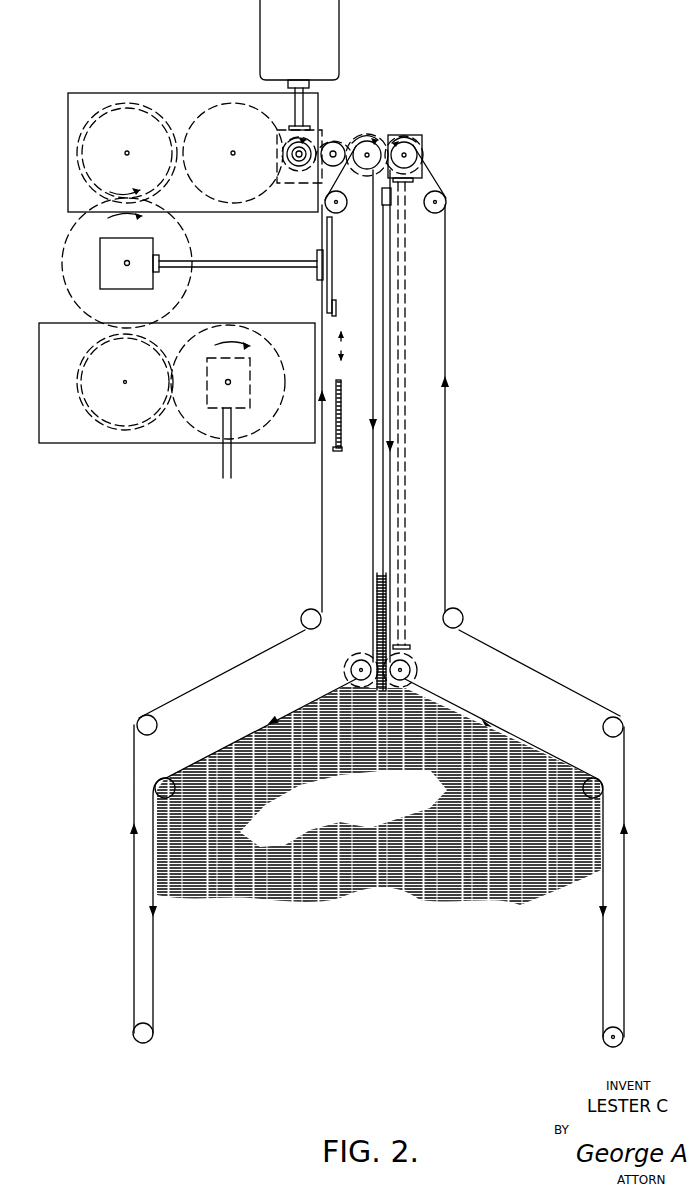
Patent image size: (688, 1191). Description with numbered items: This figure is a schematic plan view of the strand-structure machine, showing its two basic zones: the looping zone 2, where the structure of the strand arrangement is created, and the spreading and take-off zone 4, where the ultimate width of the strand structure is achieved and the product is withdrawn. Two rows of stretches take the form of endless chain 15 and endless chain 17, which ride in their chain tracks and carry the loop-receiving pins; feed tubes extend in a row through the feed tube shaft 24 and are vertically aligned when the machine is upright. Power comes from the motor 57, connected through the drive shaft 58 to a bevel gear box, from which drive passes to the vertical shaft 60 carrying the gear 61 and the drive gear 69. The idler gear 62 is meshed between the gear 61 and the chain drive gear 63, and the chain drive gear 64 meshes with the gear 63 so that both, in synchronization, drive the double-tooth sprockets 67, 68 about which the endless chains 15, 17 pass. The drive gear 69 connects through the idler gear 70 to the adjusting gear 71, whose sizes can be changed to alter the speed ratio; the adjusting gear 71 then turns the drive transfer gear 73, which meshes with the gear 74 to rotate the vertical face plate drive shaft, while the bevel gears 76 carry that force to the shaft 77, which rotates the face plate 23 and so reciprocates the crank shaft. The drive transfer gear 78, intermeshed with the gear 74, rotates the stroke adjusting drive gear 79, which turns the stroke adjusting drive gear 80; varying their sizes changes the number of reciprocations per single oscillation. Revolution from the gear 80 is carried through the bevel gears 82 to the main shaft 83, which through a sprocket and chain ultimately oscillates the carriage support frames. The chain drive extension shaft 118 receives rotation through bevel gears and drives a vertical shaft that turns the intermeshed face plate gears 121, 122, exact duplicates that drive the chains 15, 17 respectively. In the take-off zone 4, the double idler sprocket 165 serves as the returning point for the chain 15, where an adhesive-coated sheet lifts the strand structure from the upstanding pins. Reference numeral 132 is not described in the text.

The looping zone 2 is at (428, 333).
The spreading and take-off zone 4 is at (318, 895).
The endless chain 15 is at (393, 258).
The endless chain 17 is at (375, 280).
The face plate 23 is at (333, 256).
The feed tube shaft 24 is at (381, 525).
The motor 57 is at (328, 40).
The drive shaft 58 is at (310, 90).
The vertical shaft 60 is at (296, 156).
The gear 61 is at (330, 140).
The idler gear 62 is at (364, 124).
The chain drive gear 63 is at (380, 143).
The chain drive gear 64 is at (410, 142).
The double-tooth sprocket 67 is at (368, 170).
The double-tooth sprocket 68 is at (418, 155).
The drive gear 69 is at (299, 172).
The idler gear 70 is at (221, 108).
The adjusting gear 71 is at (78, 163).
The drive transfer gear 73 is at (122, 118).
The gear 74 is at (72, 270).
The bevel gears 76 is at (131, 280).
The shaft 77 is at (249, 270).
The drive transfer gear 78 is at (118, 443).
The stroke adjusting drive gear 79 is at (95, 386).
The stroke adjusting drive gear 80 is at (257, 342).
The bevel gears 82 is at (248, 400).
The main shaft 83 is at (233, 462).
The chain drive extension shaft 118 is at (405, 462).
The face plate gear 121 is at (412, 645).
The face plate gear 122 is at (352, 668).
The roller 132 is at (407, 668).
The double idler sprocket 165 is at (625, 1037).